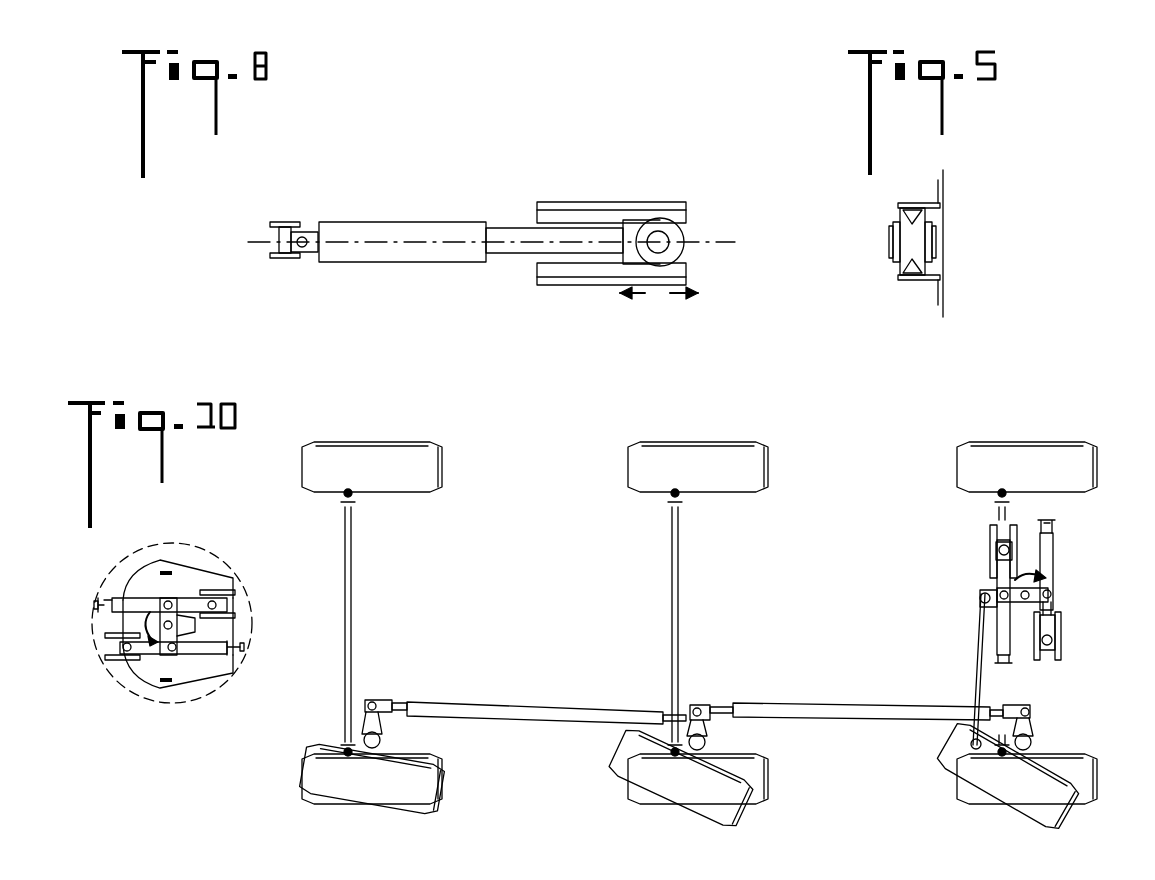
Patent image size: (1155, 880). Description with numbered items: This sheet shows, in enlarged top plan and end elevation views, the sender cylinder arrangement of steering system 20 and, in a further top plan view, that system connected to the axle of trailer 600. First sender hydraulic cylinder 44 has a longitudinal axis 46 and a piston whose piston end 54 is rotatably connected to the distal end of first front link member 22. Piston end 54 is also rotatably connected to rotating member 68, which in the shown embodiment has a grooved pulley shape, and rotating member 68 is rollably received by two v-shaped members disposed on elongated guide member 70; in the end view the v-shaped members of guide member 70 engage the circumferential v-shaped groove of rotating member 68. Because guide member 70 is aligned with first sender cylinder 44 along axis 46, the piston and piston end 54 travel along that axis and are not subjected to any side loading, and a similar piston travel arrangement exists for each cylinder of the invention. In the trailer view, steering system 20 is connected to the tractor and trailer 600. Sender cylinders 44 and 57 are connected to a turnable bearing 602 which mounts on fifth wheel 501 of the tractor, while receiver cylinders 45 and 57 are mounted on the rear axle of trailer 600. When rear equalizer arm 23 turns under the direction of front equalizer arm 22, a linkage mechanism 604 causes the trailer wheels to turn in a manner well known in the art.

In FIG. 10, the steering system 20 is at (1082, 386).
In FIG. 10, the first front link member 22 is at (228, 672).
In FIG. 10, the rear equalizer arm 23 is at (1030, 605).
In FIG. 8, the first sender hydraulic cylinder 44 is at (443, 210).
In FIG. 10, the first sender hydraulic cylinder 44 is at (125, 598).
In FIG. 10, the receiver cylinder 45 is at (1047, 572).
In FIG. 8, the longitudinal axis 46 is at (263, 243).
In FIG. 9, the longitudinal axis 46 is at (913, 242).
In FIG. 8, the piston end 54 is at (670, 238).
In FIG. 10, the sender cylinder 57 is at (178, 640).
In FIG. 8, the first rotating member 68 is at (678, 254).
In FIG. 9, the first rotating member 68 is at (915, 230).
In FIG. 8, the first guide member 70 is at (683, 213).
In FIG. 9, the first guide member 70 is at (905, 220).
In FIG. 10, the fifth wheel 501 is at (205, 580).
In FIG. 10, the trailer 600 is at (892, 590).
In FIG. 10, the turnable bearing 602 is at (173, 544).
In FIG. 10, the linkage mechanism 604 is at (978, 688).